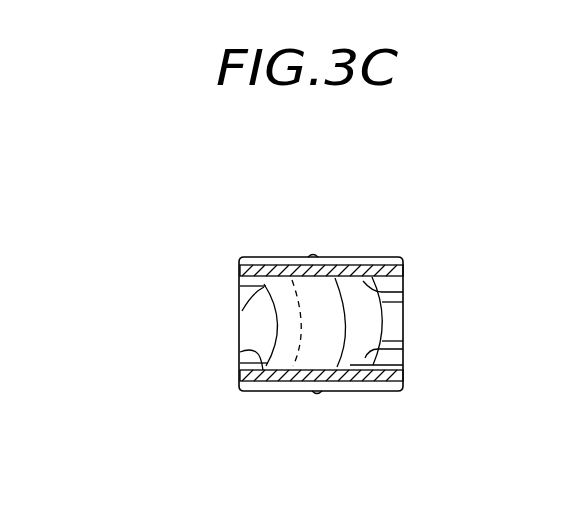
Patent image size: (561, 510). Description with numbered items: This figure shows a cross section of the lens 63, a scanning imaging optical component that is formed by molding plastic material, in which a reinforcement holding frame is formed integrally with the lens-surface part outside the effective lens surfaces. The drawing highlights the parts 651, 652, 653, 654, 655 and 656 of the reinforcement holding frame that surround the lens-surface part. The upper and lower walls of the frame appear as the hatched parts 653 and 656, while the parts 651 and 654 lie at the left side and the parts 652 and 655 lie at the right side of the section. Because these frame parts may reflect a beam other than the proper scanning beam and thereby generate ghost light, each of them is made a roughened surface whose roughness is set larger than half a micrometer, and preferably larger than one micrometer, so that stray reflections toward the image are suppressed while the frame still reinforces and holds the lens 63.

The lens 63 is at (416, 222).
The part of the reinforcement holding frame 651 is at (240, 312).
The part of the reinforcement holding frame 652 is at (403, 300).
The part of the reinforcement holding frame 653 is at (313, 256).
The part of the reinforcement holding frame 654 is at (240, 352).
The part of the reinforcement holding frame 655 is at (403, 347).
The part of the reinforcement holding frame 656 is at (318, 393).